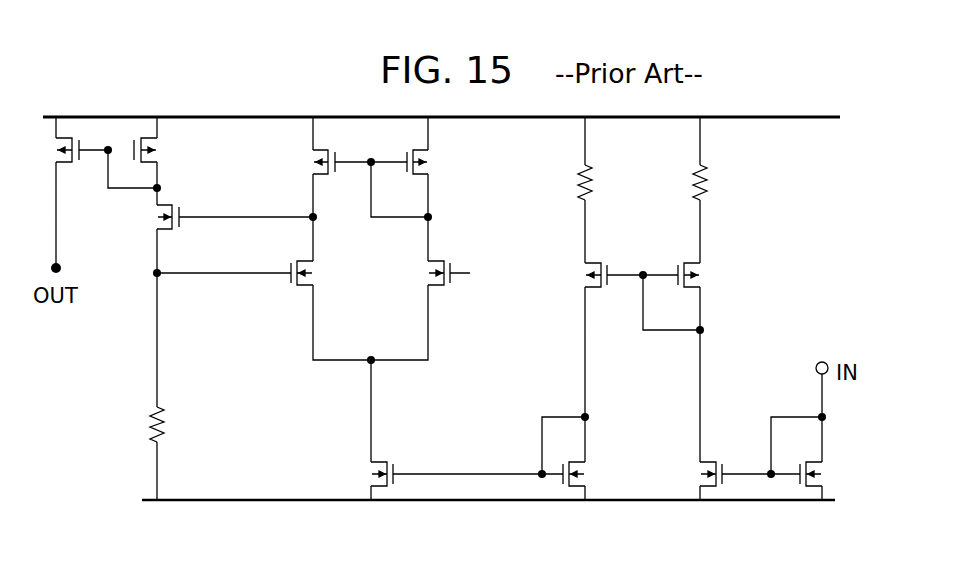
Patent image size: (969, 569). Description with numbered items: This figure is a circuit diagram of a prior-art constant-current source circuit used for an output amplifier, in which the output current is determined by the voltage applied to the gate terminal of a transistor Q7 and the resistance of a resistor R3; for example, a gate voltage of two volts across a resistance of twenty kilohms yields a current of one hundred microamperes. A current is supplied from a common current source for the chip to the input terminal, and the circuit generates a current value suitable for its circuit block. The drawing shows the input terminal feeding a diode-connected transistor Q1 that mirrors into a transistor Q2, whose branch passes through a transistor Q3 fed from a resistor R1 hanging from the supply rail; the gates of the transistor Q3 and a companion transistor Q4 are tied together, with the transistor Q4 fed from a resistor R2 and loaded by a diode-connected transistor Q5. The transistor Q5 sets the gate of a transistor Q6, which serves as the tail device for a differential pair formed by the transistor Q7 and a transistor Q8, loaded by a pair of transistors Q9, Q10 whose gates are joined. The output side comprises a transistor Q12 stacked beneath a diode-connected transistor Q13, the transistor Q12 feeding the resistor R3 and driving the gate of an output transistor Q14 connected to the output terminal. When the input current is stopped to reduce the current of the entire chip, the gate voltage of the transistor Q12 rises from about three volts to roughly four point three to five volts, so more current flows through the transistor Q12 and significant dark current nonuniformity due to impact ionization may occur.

The NMOS transistor Q1 (input current mirror, diode-connected) Q1 is at (827, 478).
The NMOS transistor Q2 (current mirror output) Q2 is at (706, 478).
The PMOS transistor Q3 is at (707, 263).
The PMOS transistor Q4 is at (595, 257).
The NMOS transistor Q5 (diode-connected) Q5 is at (590, 470).
The NMOS transistor Q6 (tail current source) Q6 is at (368, 467).
The transistor Q7 is at (453, 287).
The NMOS transistor Q8 (differential pair) Q8 is at (317, 282).
The PMOS transistor Q9 (load, diode-connected) Q9 is at (433, 168).
The PMOS transistor Q10 (load) Q10 is at (320, 162).
The transistor Q12 is at (180, 229).
The PMOS transistor Q13 (diode-connected) Q13 is at (143, 164).
The PMOS transistor Q14 (output) Q14 is at (79, 163).
The resistor R1 is at (710, 197).
The resistor R2 is at (595, 197).
The resistor R3 is at (167, 435).